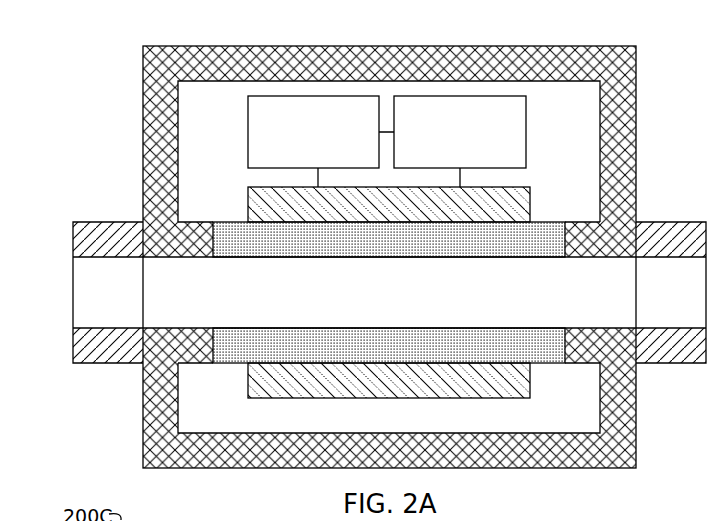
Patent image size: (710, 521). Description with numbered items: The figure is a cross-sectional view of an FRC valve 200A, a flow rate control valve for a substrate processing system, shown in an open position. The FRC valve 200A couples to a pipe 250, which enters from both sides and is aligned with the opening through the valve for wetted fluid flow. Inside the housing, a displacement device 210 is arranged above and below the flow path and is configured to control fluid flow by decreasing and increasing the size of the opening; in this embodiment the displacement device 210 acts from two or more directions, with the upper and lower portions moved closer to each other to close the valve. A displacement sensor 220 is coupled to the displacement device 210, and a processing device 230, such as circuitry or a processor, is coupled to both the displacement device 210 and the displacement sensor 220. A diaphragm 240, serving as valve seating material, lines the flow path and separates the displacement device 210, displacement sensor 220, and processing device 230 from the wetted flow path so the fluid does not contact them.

The FRC valve 200A is at (125, 64).
The displacement device 210 is at (382, 380).
The displacement sensor 220 is at (296, 143).
The processing device 230 is at (443, 143).
The diaphragm 240 is at (428, 345).
The pipe 250 is at (91, 303).